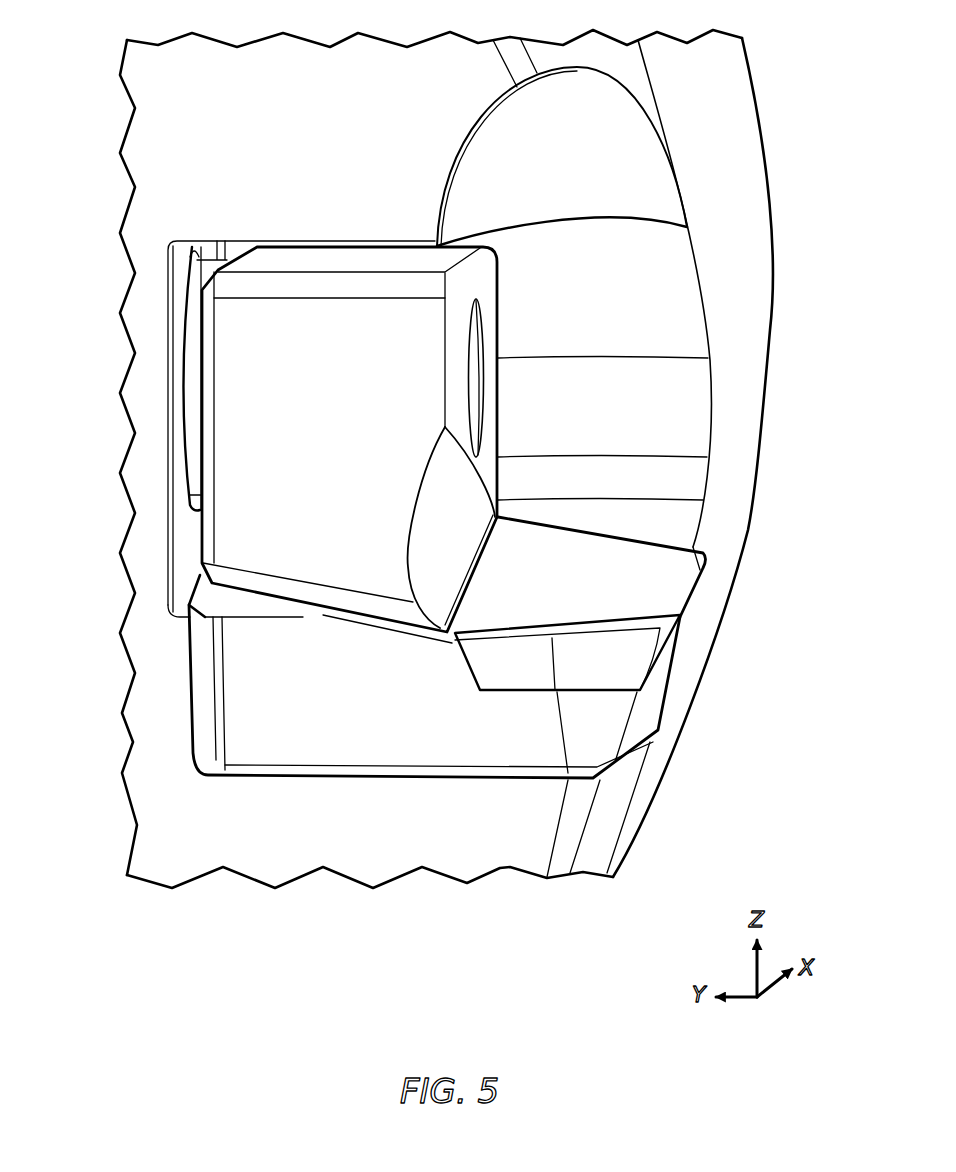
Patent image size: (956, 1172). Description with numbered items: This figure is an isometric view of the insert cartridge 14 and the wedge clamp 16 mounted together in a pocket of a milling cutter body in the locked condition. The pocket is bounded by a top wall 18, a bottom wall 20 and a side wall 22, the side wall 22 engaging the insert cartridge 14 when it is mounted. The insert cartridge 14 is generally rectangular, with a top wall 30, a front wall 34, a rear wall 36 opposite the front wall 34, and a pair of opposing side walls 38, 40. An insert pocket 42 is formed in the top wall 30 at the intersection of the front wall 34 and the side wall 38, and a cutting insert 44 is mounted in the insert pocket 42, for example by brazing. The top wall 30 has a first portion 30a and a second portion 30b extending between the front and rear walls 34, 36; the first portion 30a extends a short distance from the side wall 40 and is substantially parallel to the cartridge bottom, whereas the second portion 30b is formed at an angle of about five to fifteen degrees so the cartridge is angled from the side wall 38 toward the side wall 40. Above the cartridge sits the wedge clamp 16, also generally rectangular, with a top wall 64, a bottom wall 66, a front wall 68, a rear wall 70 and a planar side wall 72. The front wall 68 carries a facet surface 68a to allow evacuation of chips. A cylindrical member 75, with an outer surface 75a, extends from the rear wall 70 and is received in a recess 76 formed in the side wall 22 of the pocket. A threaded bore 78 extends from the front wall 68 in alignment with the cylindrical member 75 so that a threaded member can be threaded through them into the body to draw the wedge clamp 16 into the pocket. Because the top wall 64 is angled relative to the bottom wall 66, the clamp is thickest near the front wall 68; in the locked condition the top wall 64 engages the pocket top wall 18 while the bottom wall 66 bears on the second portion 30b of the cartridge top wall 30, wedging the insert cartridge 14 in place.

The insert cartridge 14 is at (540, 757).
The wedge clamp 16 is at (260, 492).
The top wall 18 is at (307, 245).
The bottom wall 20 is at (393, 777).
The side wall 22 is at (195, 680).
The top wall 30 is at (515, 547).
The first portion 30a is at (222, 605).
The second portion 30b is at (563, 550).
The front wall 34 is at (318, 735).
The rear wall 36 is at (672, 538).
The side wall 38 is at (653, 702).
The side wall 40 is at (192, 717).
The insert pocket 42 is at (595, 693).
The cutting insert 44 is at (642, 653).
The top wall 64 is at (370, 258).
The bottom wall 66 is at (323, 612).
The front wall 68 is at (487, 302).
The facet surface 68a is at (441, 535).
The rear wall 70 is at (197, 420).
The side wall 72 is at (265, 430).
The cylindrical member 75 is at (187, 368).
The outer surface 75a is at (203, 268).
The recess 76 is at (193, 330).
The threaded bore 78 is at (482, 400).